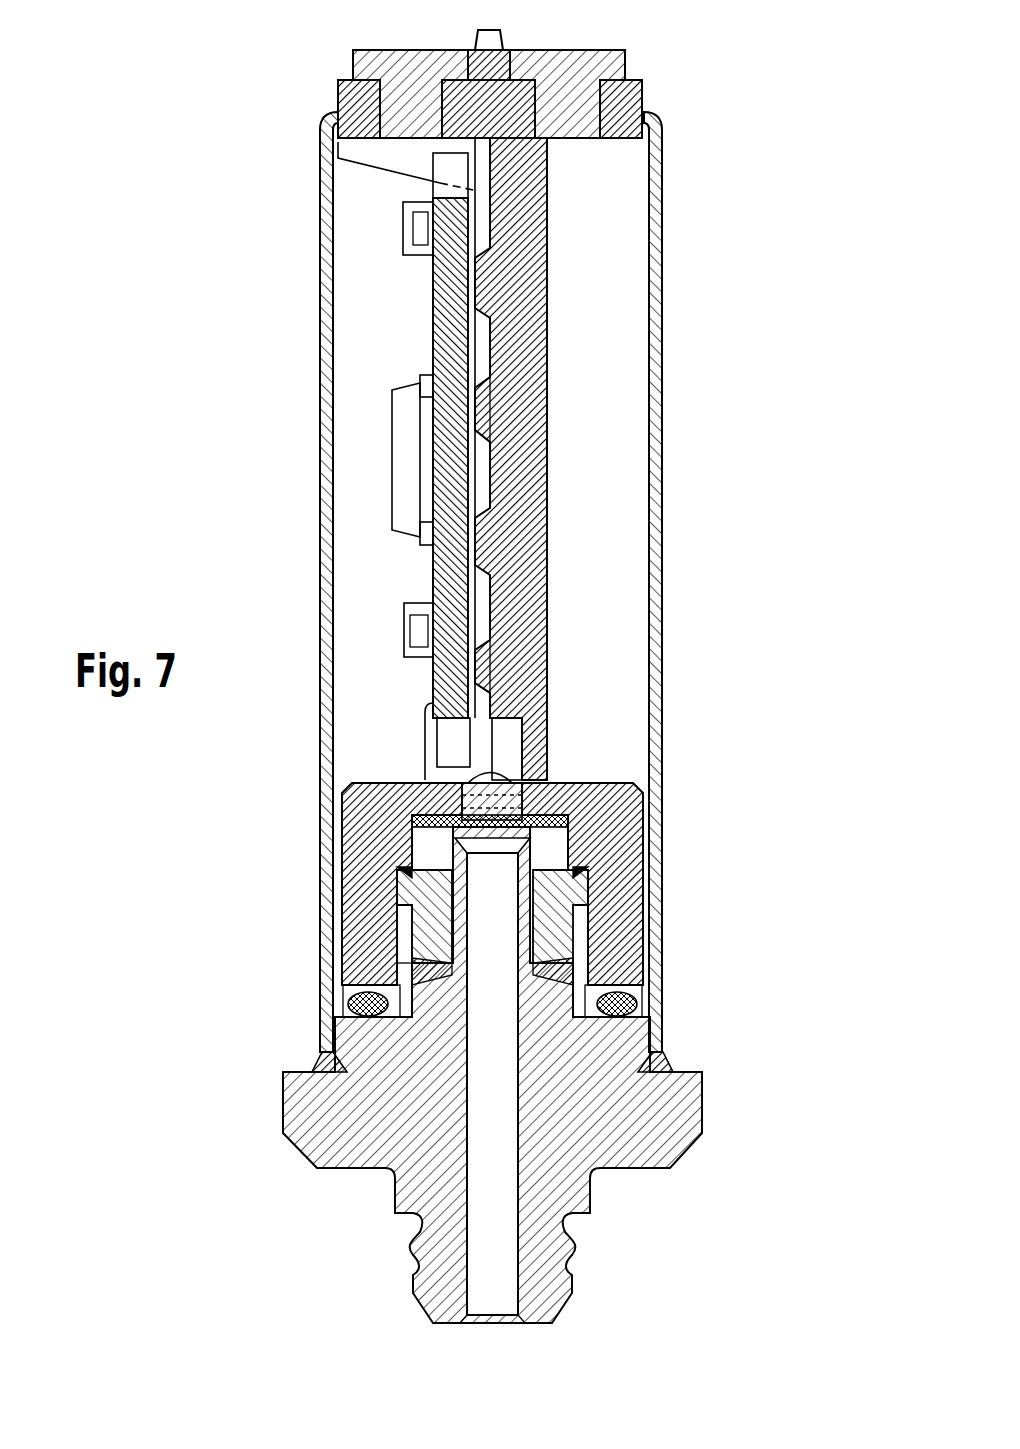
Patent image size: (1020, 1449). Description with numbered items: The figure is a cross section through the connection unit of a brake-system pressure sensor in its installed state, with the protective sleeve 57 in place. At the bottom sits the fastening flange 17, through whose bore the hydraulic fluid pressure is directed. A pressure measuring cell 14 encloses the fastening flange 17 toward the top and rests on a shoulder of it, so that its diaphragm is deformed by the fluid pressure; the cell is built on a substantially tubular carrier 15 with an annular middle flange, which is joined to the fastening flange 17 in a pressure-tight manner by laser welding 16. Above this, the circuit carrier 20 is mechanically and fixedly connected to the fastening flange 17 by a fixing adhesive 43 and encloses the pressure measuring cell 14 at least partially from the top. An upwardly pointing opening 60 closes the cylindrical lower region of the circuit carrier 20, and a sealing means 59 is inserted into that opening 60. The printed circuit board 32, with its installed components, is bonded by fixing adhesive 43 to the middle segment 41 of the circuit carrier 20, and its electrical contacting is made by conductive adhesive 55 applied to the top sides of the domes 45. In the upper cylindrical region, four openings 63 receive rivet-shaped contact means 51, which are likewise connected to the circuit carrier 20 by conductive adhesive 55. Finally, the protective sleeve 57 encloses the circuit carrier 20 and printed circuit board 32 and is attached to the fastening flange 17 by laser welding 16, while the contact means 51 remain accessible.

The pressure measuring cell 14 is at (440, 880).
The carrier 15 is at (430, 945).
The laser welding 16 is at (590, 965).
The fastening flange 17 is at (355, 1108).
The circuit carrier 20 is at (547, 598).
The printed circuit board 32 is at (435, 325).
The middle segment 41 is at (490, 212).
The fixing adhesive 43 is at (490, 243).
The domes 45 is at (477, 423).
The contact means 51 is at (402, 67).
The conductive adhesive 55 is at (642, 97).
The protective sleeve 57 is at (322, 532).
The sealing means 59 is at (480, 778).
The opening 60 is at (547, 752).
The openings 63 is at (437, 95).